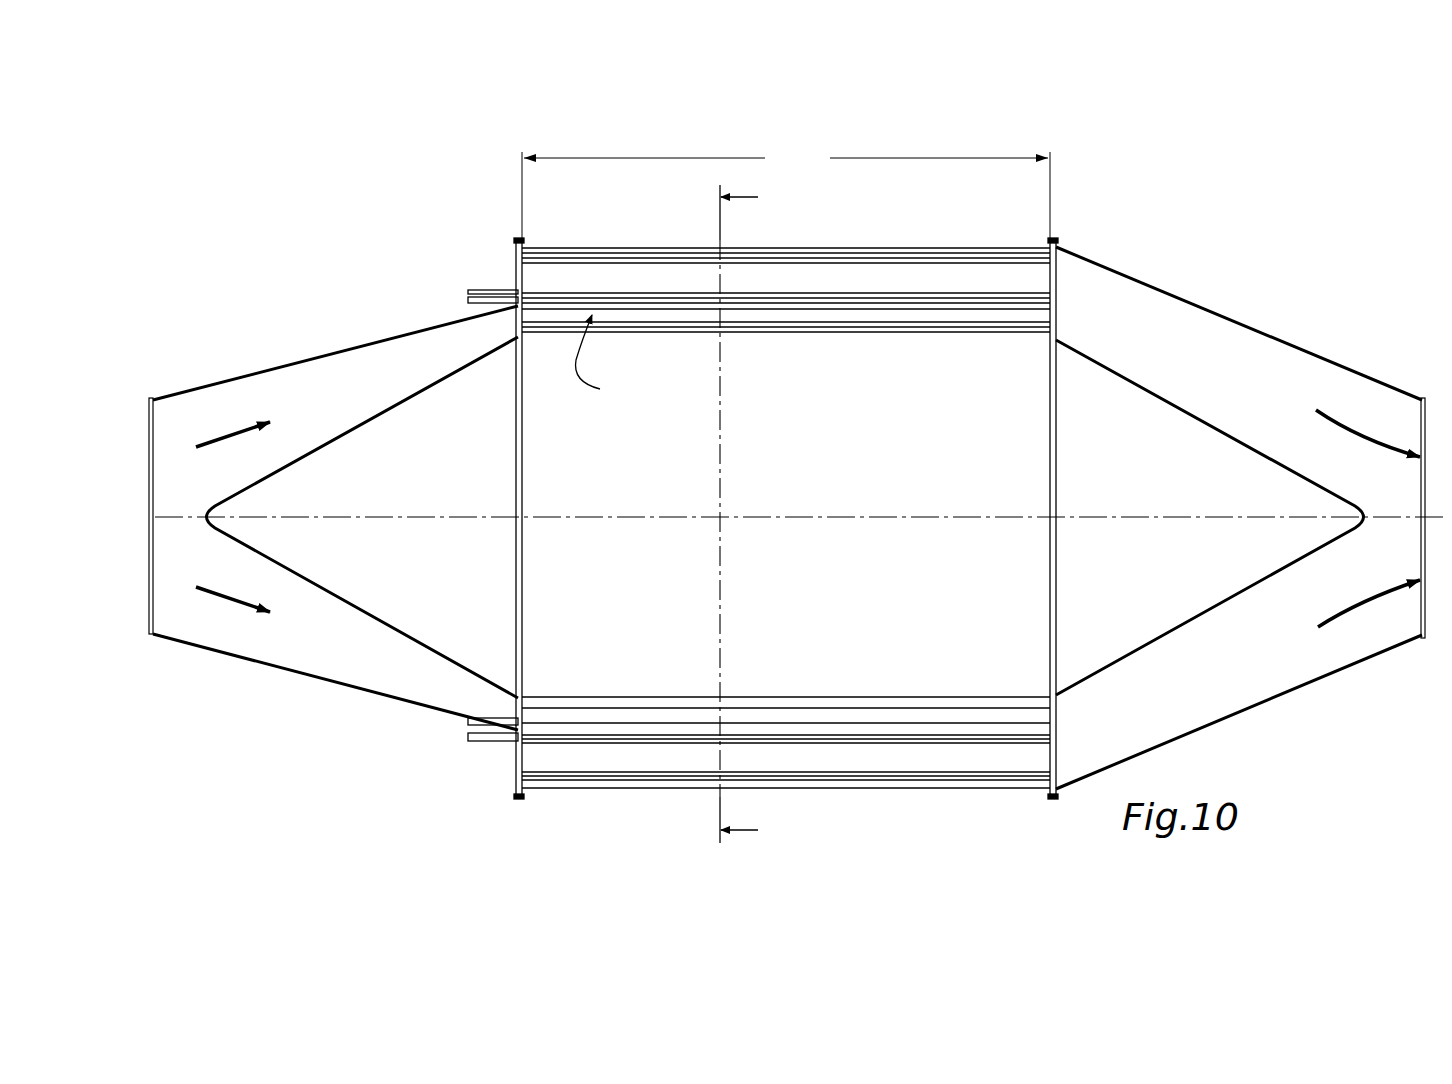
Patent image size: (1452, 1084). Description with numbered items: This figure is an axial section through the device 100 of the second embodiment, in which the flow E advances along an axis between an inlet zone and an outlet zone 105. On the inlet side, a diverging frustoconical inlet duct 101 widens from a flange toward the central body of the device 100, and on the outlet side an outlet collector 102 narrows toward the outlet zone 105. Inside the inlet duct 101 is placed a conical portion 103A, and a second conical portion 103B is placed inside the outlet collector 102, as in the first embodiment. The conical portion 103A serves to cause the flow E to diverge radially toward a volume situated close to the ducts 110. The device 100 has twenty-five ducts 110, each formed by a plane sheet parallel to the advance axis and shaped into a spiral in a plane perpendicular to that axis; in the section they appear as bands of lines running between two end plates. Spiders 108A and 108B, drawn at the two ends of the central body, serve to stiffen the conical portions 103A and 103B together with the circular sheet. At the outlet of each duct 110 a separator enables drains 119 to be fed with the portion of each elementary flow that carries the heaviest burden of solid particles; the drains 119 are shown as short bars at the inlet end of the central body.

The device 100 is at (1148, 238).
The diverging frustoconical inlet duct 101 is at (252, 662).
The outlet collector 102 is at (1250, 327).
The conical portion 103A is at (400, 632).
The conical portion 103B is at (1190, 622).
The outlet zone 105 is at (1426, 640).
The spider 108A is at (522, 611).
The spider 108B is at (1050, 610).
The duct 110 is at (902, 247).
The drain 119 is at (465, 723).